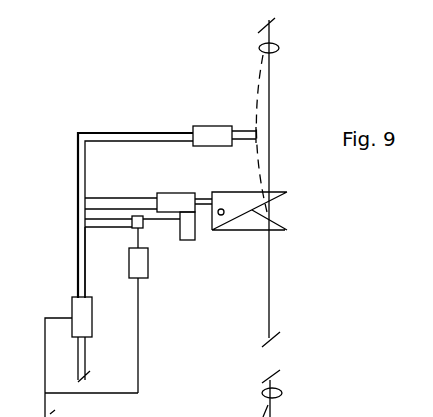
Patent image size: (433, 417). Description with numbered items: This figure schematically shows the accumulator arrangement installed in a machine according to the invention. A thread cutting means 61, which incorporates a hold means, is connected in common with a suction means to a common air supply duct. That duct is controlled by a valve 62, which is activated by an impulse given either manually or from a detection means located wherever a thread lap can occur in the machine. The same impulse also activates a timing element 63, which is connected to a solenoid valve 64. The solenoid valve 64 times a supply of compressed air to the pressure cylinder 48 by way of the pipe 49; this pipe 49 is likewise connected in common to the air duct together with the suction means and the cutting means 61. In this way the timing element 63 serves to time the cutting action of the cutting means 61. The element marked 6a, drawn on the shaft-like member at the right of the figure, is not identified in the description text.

The cylinder 6a is at (246, 133).
The thread cutting means 61 is at (230, 203).
The pressure cylinder 48 is at (190, 228).
The solenoid valve 64 is at (142, 228).
The timing element 63 is at (140, 265).
The pipe 49 is at (95, 229).
The valve 62 is at (80, 302).